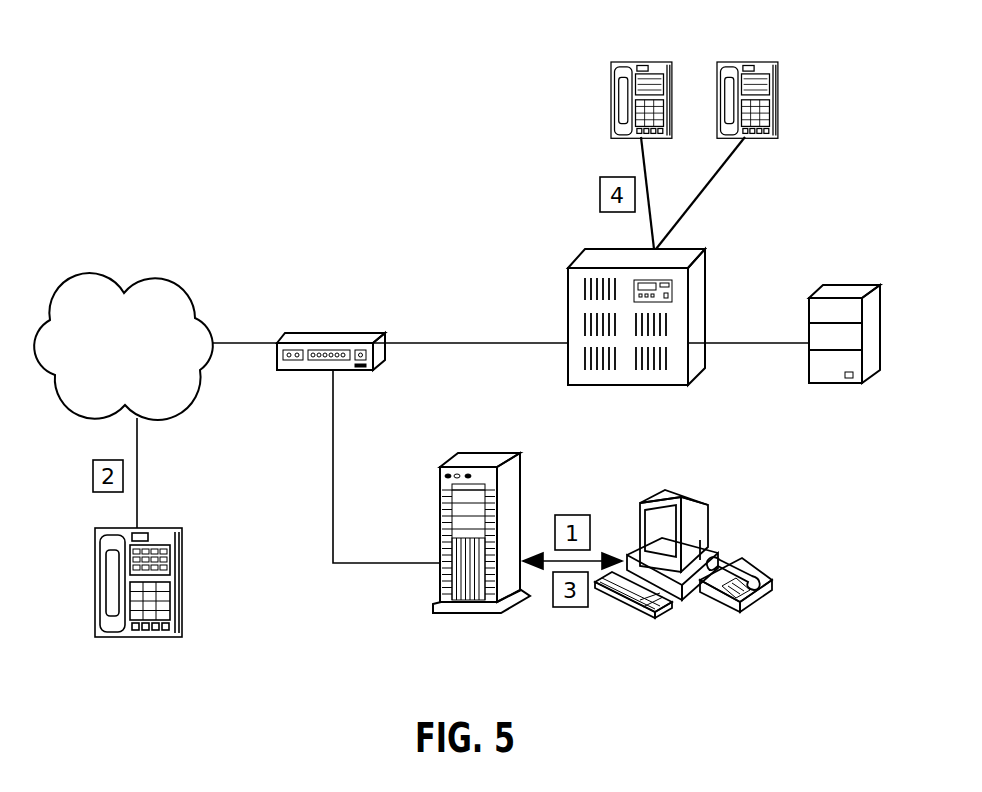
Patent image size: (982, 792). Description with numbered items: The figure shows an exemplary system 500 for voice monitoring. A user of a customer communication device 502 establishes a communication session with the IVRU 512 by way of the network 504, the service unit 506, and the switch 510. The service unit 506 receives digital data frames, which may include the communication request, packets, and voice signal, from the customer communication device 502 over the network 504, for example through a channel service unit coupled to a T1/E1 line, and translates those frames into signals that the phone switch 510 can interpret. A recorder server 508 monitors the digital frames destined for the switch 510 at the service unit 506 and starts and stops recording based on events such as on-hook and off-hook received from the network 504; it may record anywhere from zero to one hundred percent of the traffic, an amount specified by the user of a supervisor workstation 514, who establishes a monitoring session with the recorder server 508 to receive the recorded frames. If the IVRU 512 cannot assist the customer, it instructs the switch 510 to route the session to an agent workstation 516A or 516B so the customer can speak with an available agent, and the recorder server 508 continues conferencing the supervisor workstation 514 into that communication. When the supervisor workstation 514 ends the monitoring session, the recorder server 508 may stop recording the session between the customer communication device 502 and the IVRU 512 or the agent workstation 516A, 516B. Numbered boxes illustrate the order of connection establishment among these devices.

The system 500 is at (141, 165).
The customer communication device 502 is at (182, 556).
The network 504 is at (123, 346).
The service unit 506 is at (362, 333).
The recorder server 508 is at (461, 563).
The switch 510 is at (636, 346).
The IVRU 512 is at (844, 361).
The supervisor workstation 514 is at (746, 604).
The agent workstation 516A is at (656, 62).
The agent workstation 516B is at (762, 62).